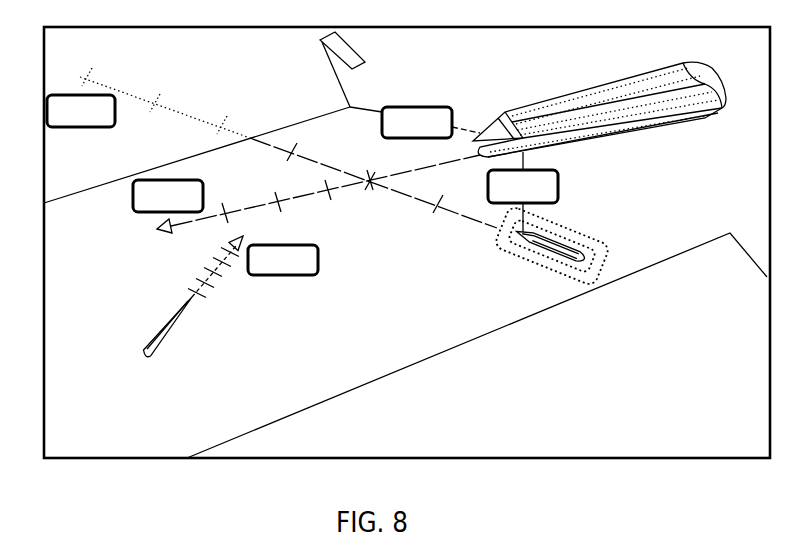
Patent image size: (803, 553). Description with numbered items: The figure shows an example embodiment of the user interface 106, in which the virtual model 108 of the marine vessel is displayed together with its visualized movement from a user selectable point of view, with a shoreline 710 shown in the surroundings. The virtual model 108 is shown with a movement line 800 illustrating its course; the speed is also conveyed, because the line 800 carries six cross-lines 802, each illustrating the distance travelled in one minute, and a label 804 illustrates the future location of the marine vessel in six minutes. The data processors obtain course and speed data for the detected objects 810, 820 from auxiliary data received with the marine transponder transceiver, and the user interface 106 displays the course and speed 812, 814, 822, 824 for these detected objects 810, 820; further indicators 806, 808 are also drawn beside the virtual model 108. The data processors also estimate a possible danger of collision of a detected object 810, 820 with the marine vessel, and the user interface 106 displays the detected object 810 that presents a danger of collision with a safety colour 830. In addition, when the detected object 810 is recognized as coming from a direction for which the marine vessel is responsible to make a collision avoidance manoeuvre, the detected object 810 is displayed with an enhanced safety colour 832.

The user interface 106 is at (411, 64).
The virtual model 108 is at (570, 92).
The shoreline 710 is at (345, 392).
The movement line 800 is at (345, 187).
The cross-lines 802 is at (276, 196).
The label 804 is at (133, 197).
The distance indicator 806 is at (558, 186).
The distance indicator 808 is at (450, 108).
The detected object 810 is at (553, 247).
The course and speed 812 is at (473, 220).
The course and speed 814 is at (80, 127).
The detected object 820 is at (163, 327).
The course and speed 822 is at (208, 282).
The course and speed 824 is at (318, 259).
The safety colour 830 is at (592, 262).
The enhanced safety colour 832 is at (607, 248).